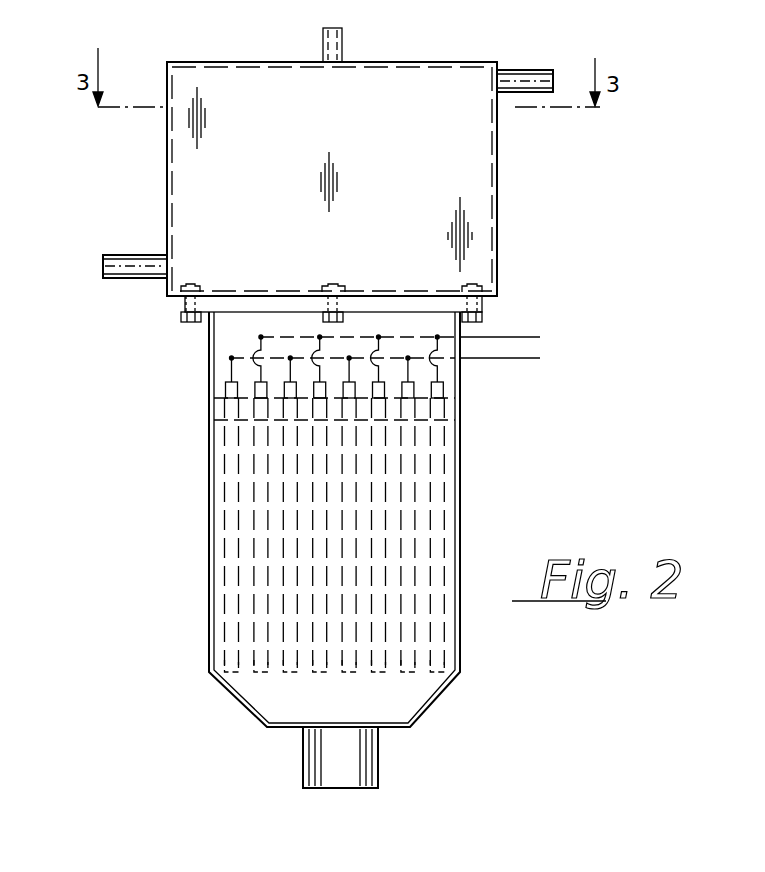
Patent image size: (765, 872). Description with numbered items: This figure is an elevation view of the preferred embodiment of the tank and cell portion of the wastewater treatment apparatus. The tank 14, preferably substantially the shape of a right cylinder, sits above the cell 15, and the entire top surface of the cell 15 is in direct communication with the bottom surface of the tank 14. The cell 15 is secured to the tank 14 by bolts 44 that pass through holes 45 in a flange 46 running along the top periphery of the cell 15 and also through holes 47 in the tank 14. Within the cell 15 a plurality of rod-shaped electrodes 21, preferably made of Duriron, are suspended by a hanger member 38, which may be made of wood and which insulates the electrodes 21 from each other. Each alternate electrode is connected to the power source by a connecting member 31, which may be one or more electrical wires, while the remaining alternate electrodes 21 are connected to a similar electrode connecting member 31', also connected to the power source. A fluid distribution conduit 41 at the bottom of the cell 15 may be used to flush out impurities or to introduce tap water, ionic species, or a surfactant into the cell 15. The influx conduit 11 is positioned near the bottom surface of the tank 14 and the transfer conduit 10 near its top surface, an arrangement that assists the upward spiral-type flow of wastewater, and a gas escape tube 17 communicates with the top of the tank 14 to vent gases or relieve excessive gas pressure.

The transfer conduit 10 is at (537, 71).
The influx conduit 11 is at (103, 268).
The tank 14 is at (497, 200).
The cell 15 is at (210, 532).
The gas escape tube 17 is at (343, 37).
The electrodes 21 is at (445, 540).
The connecting member 31 is at (348, 370).
The electrode connecting member 31' is at (396, 367).
The hanger member 38 is at (222, 410).
The fluid distribution conduit 41 is at (303, 757).
The bolts 44 is at (483, 316).
The holes 45 is at (484, 304).
The flange 46 is at (185, 305).
The holes 47 is at (323, 296).